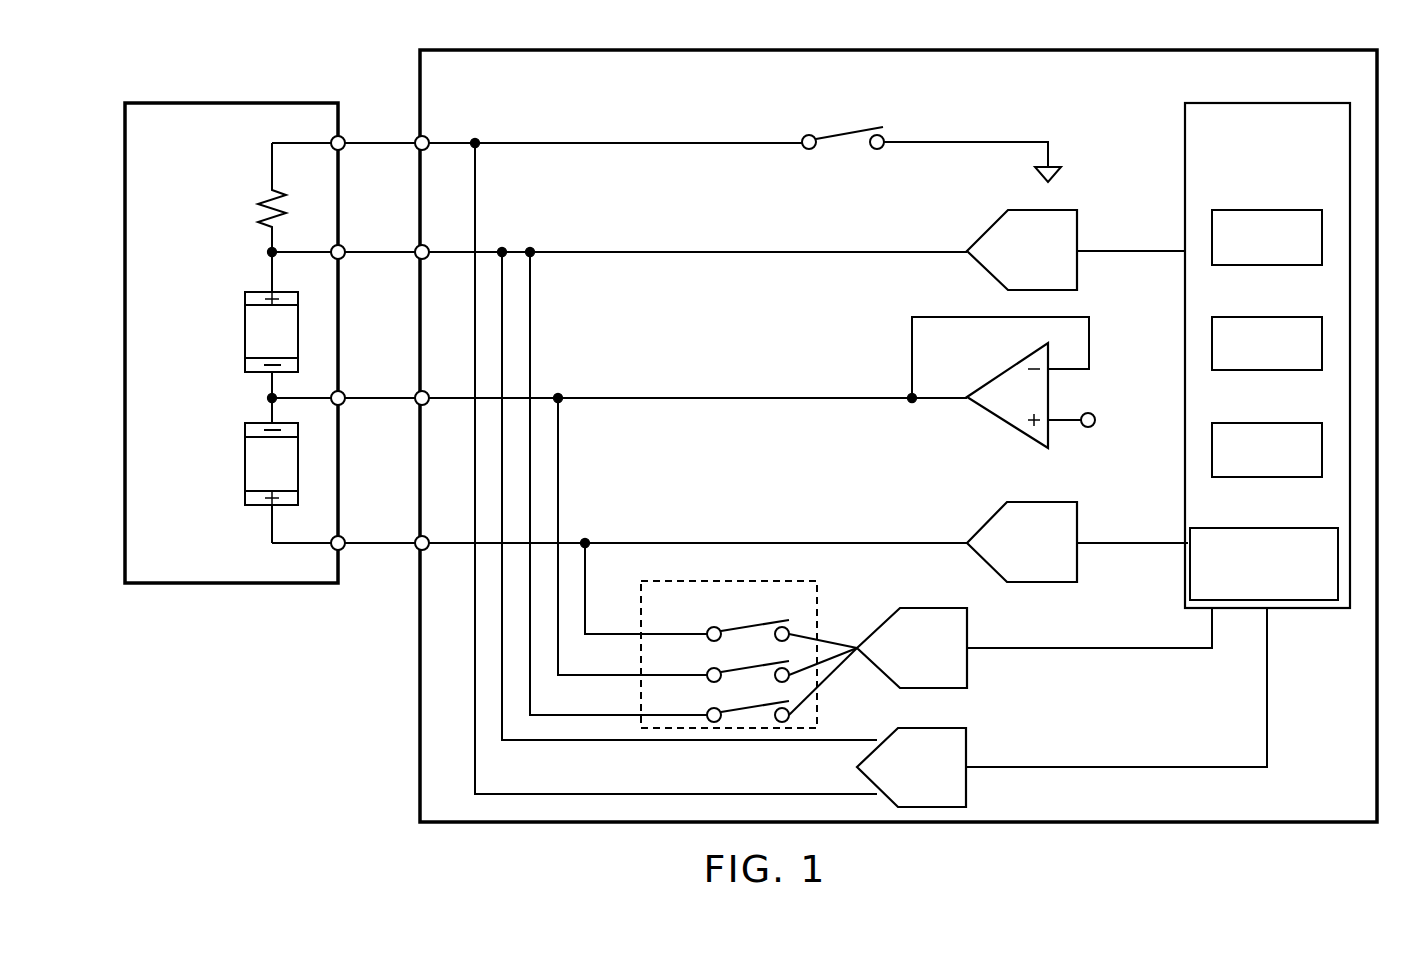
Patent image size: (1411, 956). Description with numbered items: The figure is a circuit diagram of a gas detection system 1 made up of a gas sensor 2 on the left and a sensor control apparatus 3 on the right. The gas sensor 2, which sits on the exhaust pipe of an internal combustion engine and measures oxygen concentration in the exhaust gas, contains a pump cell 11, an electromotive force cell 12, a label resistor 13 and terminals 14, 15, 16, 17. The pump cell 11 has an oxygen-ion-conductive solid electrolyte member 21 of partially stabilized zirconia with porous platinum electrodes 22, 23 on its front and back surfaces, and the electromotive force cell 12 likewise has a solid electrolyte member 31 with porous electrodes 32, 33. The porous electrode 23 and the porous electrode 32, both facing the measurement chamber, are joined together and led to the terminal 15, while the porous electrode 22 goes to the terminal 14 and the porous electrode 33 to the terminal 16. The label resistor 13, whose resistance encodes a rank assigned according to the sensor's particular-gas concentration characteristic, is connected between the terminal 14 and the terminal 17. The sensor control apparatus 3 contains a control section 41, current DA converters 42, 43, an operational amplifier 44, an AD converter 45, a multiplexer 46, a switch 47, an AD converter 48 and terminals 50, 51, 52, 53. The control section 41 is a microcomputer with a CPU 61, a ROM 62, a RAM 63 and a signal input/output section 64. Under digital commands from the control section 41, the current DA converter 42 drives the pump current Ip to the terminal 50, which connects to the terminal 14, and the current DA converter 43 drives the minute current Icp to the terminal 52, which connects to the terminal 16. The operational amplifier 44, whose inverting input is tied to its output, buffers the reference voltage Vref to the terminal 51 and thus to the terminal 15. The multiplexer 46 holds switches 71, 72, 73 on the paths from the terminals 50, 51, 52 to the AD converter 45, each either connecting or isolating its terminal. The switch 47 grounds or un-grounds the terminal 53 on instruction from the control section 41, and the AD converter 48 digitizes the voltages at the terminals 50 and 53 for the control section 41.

The gas detection system 1 is at (257, 52).
The gas sensor 2 is at (262, 585).
The sensor control apparatus 3 is at (1228, 50).
The pump cell 11 is at (228, 326).
The electromotive force cell 12 is at (230, 458).
The label resistor 13 is at (262, 192).
The terminal 14 is at (342, 243).
The terminal 15 is at (342, 389).
The terminal 16 is at (342, 535).
The terminal 17 is at (342, 134).
The oxygen-ion-conductive solid electrolyte member 21 is at (248, 326).
The porous electrode 22 is at (245, 300).
The porous electrode 23 is at (239, 358).
The oxygen-ion-conductive solid electrolyte member 31 is at (248, 460).
The porous electrode 32 is at (245, 432).
The porous electrode 33 is at (239, 492).
The control section 41 is at (1255, 337).
The current DA converter 42 is at (998, 216).
The current DA converter 43 is at (996, 510).
The operational amplifier 44 is at (1005, 368).
The AD converter 45 is at (935, 607).
The multiplexer 46 is at (721, 642).
The switch 47 is at (845, 130).
The AD converter 48 is at (935, 727).
The terminal 50 is at (426, 243).
The terminal 51 is at (426, 389).
The terminal 52 is at (426, 535).
The terminal 53 is at (426, 134).
The CPU 61 is at (1275, 209).
The ROM 62 is at (1275, 316).
The RAM 63 is at (1275, 422).
The signal input/output section 64 is at (1275, 527).
The switch 71 is at (745, 705).
The switch 72 is at (745, 666).
The switch 73 is at (745, 626).